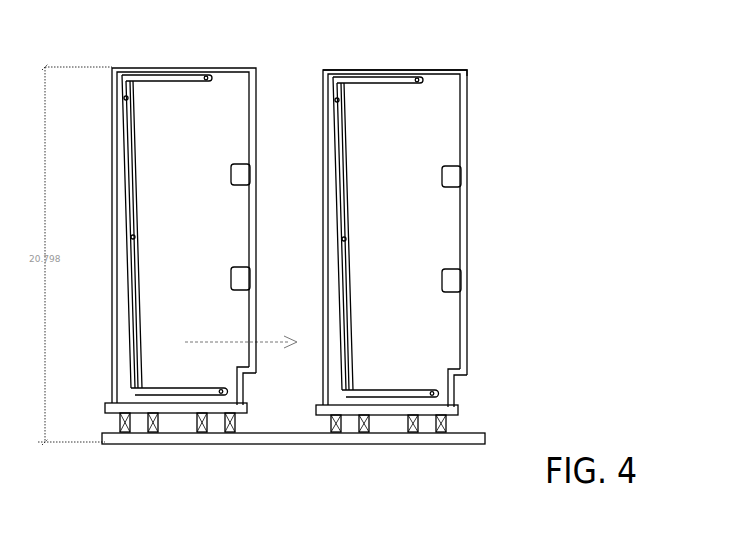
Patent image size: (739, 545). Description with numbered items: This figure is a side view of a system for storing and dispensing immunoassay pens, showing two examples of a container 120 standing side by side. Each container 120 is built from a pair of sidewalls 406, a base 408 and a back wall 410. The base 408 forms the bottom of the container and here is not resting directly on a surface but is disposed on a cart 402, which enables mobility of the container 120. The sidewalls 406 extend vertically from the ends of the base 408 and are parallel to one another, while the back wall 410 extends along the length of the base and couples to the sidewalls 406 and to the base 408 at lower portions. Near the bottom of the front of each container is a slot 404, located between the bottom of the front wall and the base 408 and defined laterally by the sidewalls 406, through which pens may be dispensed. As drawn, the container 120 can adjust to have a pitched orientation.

The container 120 is at (445, 88).
The cart 402 is at (192, 422).
The slot 404 is at (248, 367).
The sidewall 406 is at (189, 100).
The base 408 is at (120, 412).
The back wall 410 is at (128, 76).